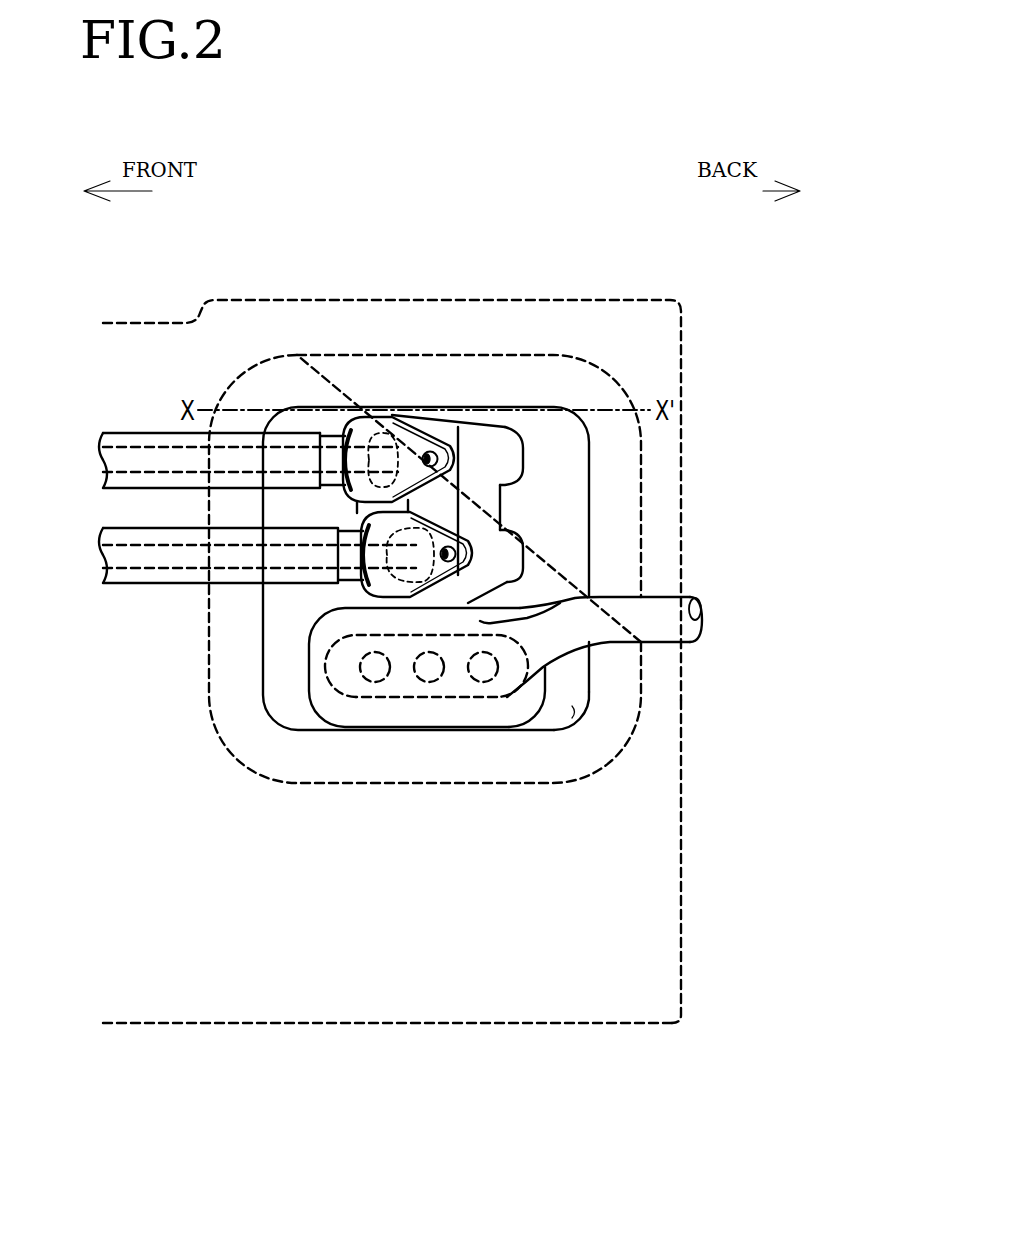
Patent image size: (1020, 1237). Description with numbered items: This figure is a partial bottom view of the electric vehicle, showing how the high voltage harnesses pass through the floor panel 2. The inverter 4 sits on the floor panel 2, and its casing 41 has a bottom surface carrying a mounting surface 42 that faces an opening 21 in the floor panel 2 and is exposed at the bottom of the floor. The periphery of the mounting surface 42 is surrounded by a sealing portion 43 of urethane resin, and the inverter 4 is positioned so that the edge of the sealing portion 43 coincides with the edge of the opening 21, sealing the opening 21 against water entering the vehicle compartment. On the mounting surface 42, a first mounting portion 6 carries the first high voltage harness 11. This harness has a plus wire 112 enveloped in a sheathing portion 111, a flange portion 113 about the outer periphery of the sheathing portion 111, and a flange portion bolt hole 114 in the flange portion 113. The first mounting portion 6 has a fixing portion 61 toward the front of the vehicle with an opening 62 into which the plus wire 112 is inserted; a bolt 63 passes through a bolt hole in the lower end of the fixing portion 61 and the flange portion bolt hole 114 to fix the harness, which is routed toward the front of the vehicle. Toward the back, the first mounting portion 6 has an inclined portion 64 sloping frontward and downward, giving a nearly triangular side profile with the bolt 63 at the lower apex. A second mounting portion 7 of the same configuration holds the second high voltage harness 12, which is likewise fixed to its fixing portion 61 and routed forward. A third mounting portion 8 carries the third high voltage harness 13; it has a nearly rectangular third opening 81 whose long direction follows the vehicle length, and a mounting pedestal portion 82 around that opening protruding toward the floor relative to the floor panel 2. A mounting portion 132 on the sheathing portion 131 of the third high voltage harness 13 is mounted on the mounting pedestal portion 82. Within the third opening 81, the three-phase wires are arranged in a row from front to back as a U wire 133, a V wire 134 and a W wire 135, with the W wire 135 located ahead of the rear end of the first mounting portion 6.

The floor panel 2 is at (640, 317).
The inverter 4 is at (657, 957).
The casing 41 is at (465, 1010).
The mounting surface 42 is at (573, 533).
The sealing portion 43 is at (600, 388).
The first mounting portion 6 is at (504, 412).
The fixing portion 61 is at (438, 438).
The opening 62 is at (398, 410).
The bolt 63 is at (437, 459).
The inclined portion 64 is at (513, 468).
The second mounting portion 7 is at (465, 604).
The third mounting portion 8 is at (329, 744).
The third opening 81 is at (385, 696).
The mounting pedestal portion 82 is at (497, 715).
The first high voltage harness 11 is at (132, 490).
The second high voltage harness 12 is at (120, 585).
The third high voltage harness 13 is at (633, 656).
The sheathing portion 111 is at (148, 433).
The plus wire 112 is at (128, 447).
The flange portion 113 is at (416, 443).
The flange portion bolt hole 114 is at (436, 506).
The sheathing portion 131 is at (655, 628).
The mounting portion 132 is at (482, 707).
The U wire 133 is at (375, 670).
The V wire 134 is at (427, 672).
The W wire 135 is at (483, 670).
The opening 21 is at (575, 712).